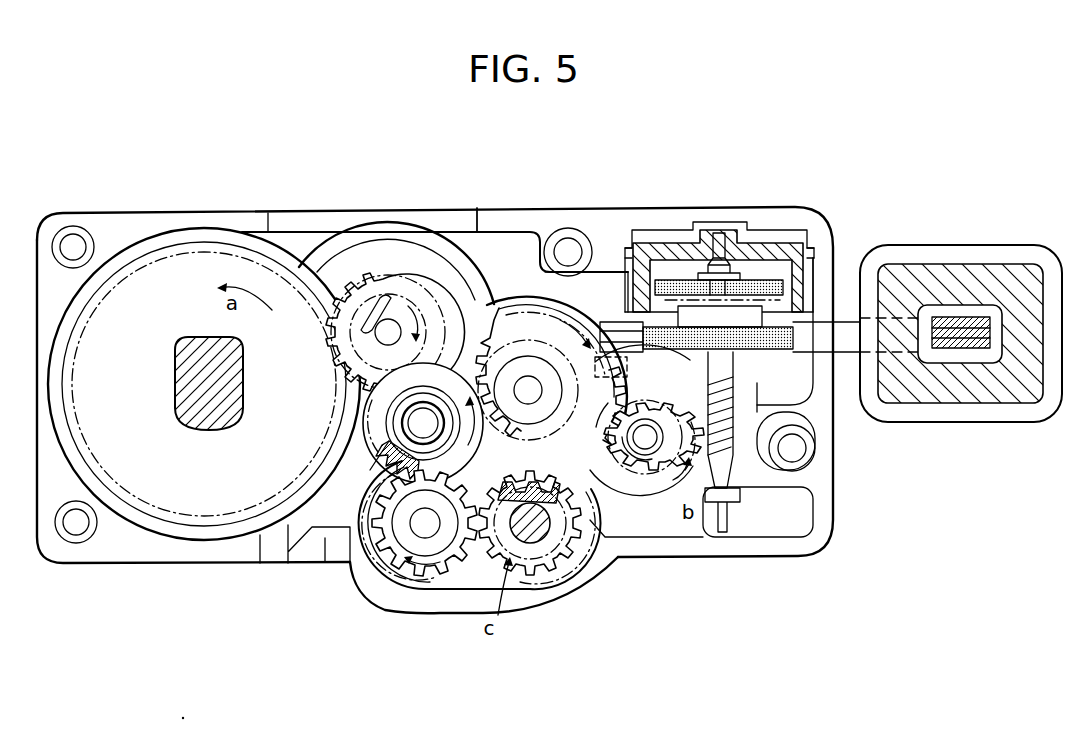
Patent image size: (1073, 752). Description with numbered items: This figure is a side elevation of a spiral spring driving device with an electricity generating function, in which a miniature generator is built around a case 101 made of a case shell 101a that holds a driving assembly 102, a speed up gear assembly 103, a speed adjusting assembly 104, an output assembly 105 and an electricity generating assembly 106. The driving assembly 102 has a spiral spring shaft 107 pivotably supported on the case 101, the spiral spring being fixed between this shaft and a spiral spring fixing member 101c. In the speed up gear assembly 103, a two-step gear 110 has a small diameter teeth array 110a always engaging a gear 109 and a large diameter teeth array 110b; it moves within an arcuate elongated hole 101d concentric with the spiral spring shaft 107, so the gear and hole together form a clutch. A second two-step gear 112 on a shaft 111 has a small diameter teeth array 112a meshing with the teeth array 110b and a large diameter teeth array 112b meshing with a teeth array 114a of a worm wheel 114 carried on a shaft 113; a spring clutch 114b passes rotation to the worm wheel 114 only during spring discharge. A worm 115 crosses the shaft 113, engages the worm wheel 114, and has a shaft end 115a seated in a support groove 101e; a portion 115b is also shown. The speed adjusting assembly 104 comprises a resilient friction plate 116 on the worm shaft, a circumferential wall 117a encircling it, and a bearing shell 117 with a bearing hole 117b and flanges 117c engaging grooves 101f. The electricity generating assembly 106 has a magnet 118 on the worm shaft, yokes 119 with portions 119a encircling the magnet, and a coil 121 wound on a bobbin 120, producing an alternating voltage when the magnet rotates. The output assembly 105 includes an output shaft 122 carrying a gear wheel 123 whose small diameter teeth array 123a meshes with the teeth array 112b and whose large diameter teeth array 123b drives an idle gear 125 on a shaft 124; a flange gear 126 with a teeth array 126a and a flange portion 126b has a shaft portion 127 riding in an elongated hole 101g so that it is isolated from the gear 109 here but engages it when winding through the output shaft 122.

The case 101 is at (90, 206).
The case shell 101a is at (77, 546).
The spiral spring fixing member 101c is at (281, 548).
The arcuate elongated hole 101d is at (384, 297).
The support groove 101e is at (723, 533).
The grooves 101f is at (613, 247).
The elongated hole 101g is at (372, 418).
The driving assembly 102 is at (172, 530).
The speed up gear assembly 103 is at (502, 240).
The speed adjusting assembly 104 is at (760, 205).
The output assembly 105 is at (466, 585).
The electricity generating assembly 106 is at (866, 441).
The spiral spring shaft 107 is at (205, 413).
The gear 109 is at (241, 246).
The two-step gear 110 is at (337, 226).
The small diameter teeth array 110a is at (352, 294).
The large diameter teeth array 110b is at (512, 246).
The shaft 111 is at (530, 394).
The two-step gear 112 is at (547, 289).
The small diameter teeth array 112a is at (549, 347).
The large diameter teeth array 112b is at (567, 521).
The shaft 113 is at (622, 411).
The worm wheel 114 is at (714, 452).
The teeth array 114a is at (640, 436).
The spring clutch 114b is at (645, 452).
The worm 115 is at (728, 400).
The shaft end 115a is at (727, 505).
The worm shaft collar 115b is at (712, 226).
The friction plate 116 is at (770, 287).
The bearing shell 117 is at (782, 240).
The circumferential wall 117a is at (925, 306).
The bearing hole 117b is at (718, 234).
The flanges 117c is at (626, 250).
The magnet 118 is at (775, 340).
The yokes 119 is at (843, 355).
The portions 119a is at (612, 320).
The bobbin 120 is at (1006, 266).
The coil 121 is at (1010, 392).
The output shaft 122 is at (530, 546).
The gear wheel 123 is at (574, 582).
The small diameter teeth array 123a is at (508, 480).
The large diameter teeth array 123b is at (583, 536).
The shaft 124 is at (423, 523).
The idle gear 125 is at (374, 538).
The flange gear 126 is at (376, 459).
The teeth array 126a is at (398, 473).
The flange portion 126b is at (372, 447).
The shaft portion 127 is at (427, 420).